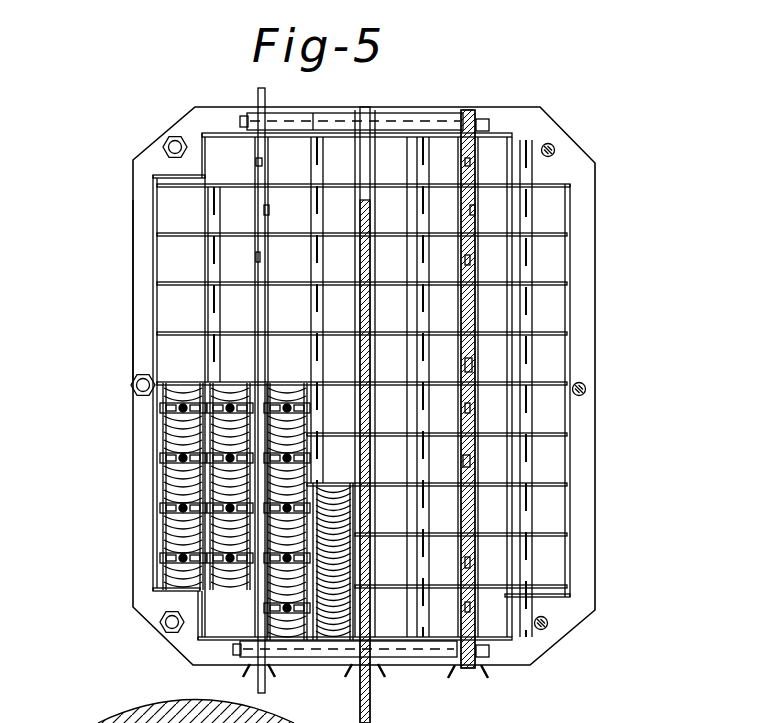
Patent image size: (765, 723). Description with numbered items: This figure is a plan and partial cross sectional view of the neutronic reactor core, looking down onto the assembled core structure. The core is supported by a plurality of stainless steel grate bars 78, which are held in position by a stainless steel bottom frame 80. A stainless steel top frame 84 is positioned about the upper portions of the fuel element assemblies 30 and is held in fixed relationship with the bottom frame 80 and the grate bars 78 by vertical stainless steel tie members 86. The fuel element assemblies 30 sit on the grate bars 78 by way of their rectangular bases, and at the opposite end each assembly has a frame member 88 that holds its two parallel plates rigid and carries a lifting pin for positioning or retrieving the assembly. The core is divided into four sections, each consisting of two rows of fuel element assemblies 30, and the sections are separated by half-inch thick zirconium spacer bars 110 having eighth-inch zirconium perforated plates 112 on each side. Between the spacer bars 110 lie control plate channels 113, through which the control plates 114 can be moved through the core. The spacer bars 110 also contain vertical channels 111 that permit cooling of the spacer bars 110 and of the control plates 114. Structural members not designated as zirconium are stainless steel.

The fuel element assemblies 30 is at (165, 526).
The grate bars 78 is at (210, 322).
The bottom frame 80 is at (580, 362).
The top frame 84 is at (136, 291).
The tie members 86 is at (555, 149).
The frame member 88 is at (166, 501).
The spacer bars 110 is at (260, 280).
The vertical channels 111 is at (263, 195).
The perforated plates 112 is at (462, 312).
The control plate channels 113 is at (364, 197).
The control plates 114 is at (267, 96).